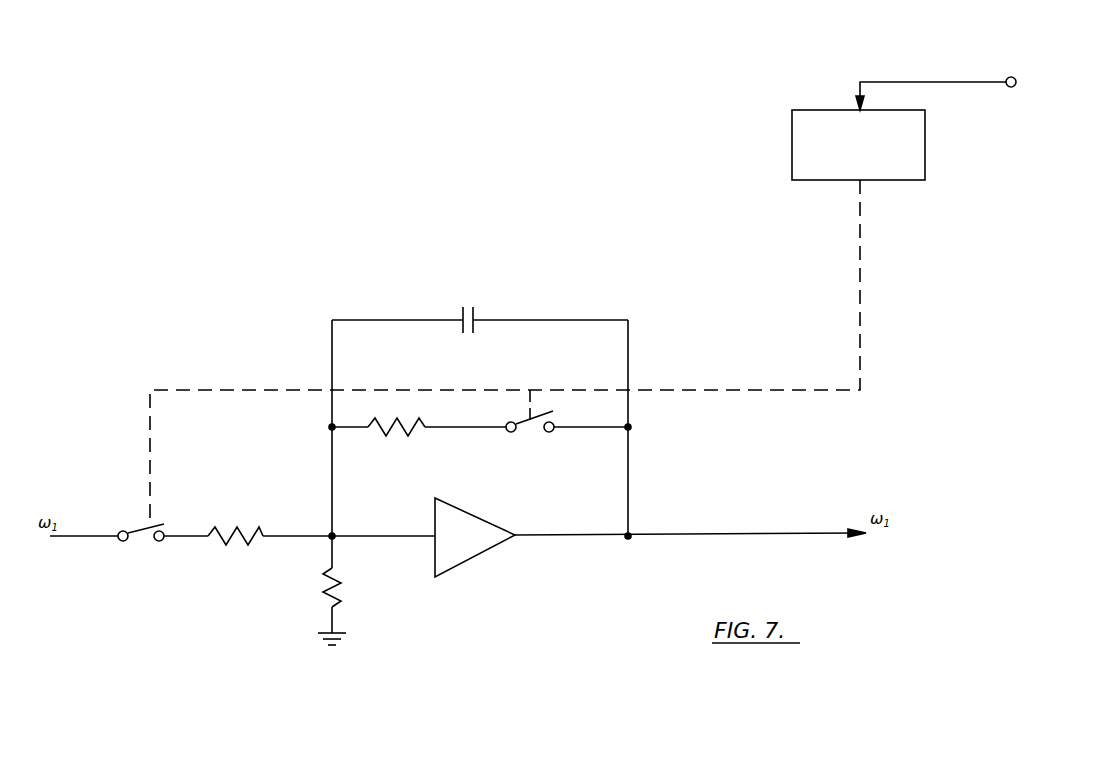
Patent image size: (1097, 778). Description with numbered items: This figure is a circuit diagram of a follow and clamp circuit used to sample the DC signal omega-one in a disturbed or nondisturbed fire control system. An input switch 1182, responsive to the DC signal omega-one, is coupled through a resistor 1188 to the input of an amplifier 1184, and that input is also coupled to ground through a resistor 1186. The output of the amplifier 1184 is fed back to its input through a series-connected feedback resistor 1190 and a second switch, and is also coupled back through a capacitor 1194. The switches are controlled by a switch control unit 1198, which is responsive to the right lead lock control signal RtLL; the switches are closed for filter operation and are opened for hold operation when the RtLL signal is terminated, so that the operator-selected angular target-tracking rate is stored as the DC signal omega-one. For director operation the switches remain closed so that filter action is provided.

The switch 1182 is at (141, 546).
The amplifier 1184 is at (474, 513).
The resistor 1186 is at (327, 596).
The resistor 1188 is at (233, 546).
The feedback resistor 1190 is at (405, 434).
The capacitor 1194 is at (476, 309).
The switch control unit 1198 is at (800, 170).